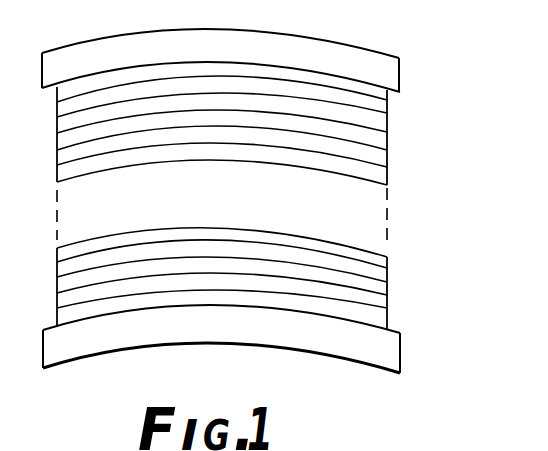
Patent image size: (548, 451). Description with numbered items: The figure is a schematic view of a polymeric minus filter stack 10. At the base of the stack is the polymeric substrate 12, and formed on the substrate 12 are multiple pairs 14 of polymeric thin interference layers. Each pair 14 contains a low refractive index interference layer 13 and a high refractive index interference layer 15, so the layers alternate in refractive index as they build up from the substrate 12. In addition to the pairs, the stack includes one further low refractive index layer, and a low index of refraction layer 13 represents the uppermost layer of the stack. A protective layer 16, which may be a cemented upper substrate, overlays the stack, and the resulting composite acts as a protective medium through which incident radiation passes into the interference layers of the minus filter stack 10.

The minus filter stack 10 is at (387, 46).
The substrate 12 is at (110, 343).
The low refractive index interference layer 13 is at (380, 94).
The pairs of interference layers 14 is at (388, 256).
The high refractive index interference layer 15 is at (380, 111).
The protective layer 16 is at (128, 43).